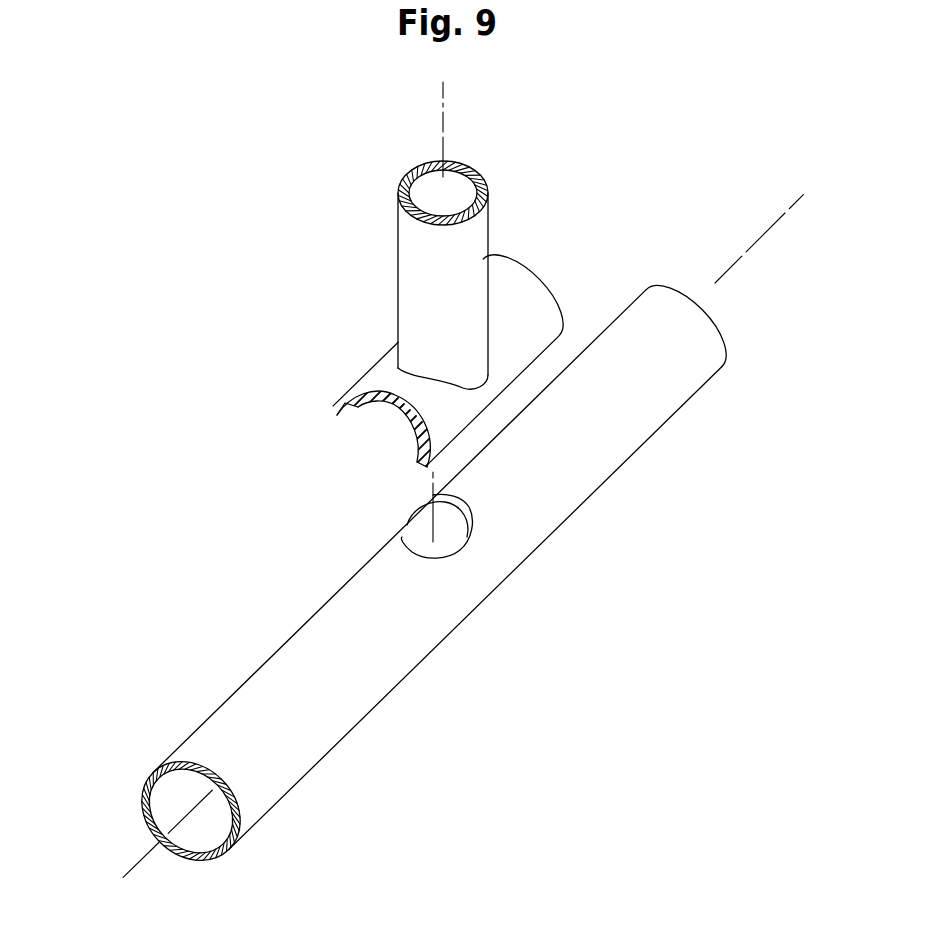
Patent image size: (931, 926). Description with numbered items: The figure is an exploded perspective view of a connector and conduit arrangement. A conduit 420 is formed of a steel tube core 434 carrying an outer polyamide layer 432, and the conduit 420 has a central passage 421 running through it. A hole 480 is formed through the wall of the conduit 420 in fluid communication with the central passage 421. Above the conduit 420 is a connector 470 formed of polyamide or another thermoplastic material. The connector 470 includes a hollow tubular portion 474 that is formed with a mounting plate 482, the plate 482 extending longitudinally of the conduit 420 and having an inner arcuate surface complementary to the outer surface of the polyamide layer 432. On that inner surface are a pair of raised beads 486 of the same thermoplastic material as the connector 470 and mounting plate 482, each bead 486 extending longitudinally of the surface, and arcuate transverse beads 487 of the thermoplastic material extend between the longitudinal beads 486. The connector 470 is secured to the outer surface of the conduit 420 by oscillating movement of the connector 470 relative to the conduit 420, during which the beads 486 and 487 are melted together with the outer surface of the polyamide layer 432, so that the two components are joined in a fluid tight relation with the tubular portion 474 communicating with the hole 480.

The conduit 420 is at (444, 548).
The central passage 421 is at (191, 811).
The polyamide layer 432 is at (191, 811).
The steel tube core 434 is at (620, 456).
The hole 480 is at (453, 547).
The connector 470 is at (368, 256).
The hollow tubular portion 474 is at (398, 292).
The mounting plate 482 is at (522, 273).
The raised beads 486 is at (345, 404).
The arcuate transverse beads 487 is at (389, 408).